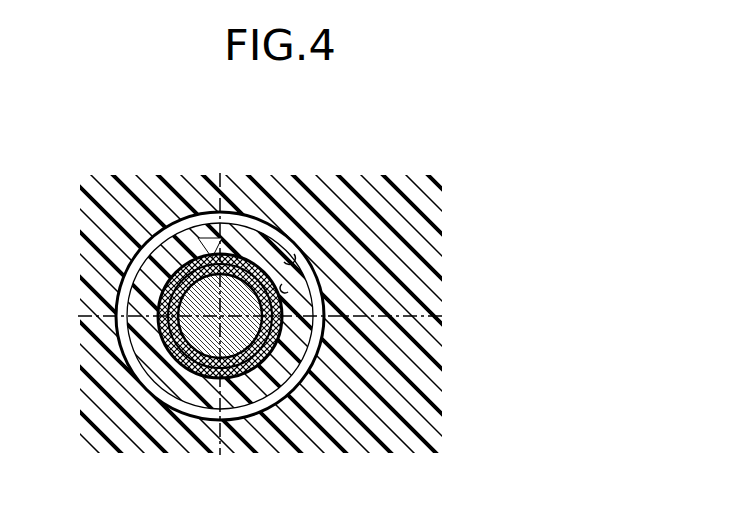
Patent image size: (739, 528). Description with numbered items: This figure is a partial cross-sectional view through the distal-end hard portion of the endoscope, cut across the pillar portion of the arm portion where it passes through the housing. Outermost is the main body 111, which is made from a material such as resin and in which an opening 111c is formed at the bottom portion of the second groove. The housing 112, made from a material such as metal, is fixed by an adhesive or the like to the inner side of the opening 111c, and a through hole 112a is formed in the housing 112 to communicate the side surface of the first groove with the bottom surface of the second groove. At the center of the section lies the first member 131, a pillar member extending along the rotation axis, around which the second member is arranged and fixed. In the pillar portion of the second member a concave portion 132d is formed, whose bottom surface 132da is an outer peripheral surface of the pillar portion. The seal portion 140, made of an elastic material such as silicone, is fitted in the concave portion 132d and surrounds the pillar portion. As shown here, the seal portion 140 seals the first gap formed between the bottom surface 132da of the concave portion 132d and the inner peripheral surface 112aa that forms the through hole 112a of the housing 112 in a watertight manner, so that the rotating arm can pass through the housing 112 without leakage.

The main body 111 is at (257, 182).
The opening 111c is at (289, 244).
The housing 112 is at (175, 222).
The through hole 112a is at (208, 262).
The inner peripheral surface 112aa is at (288, 292).
The seal portion 140 is at (290, 345).
The first member 131 is at (204, 360).
The concave portion 132d is at (228, 372).
The bottom surface 132da is at (238, 368).